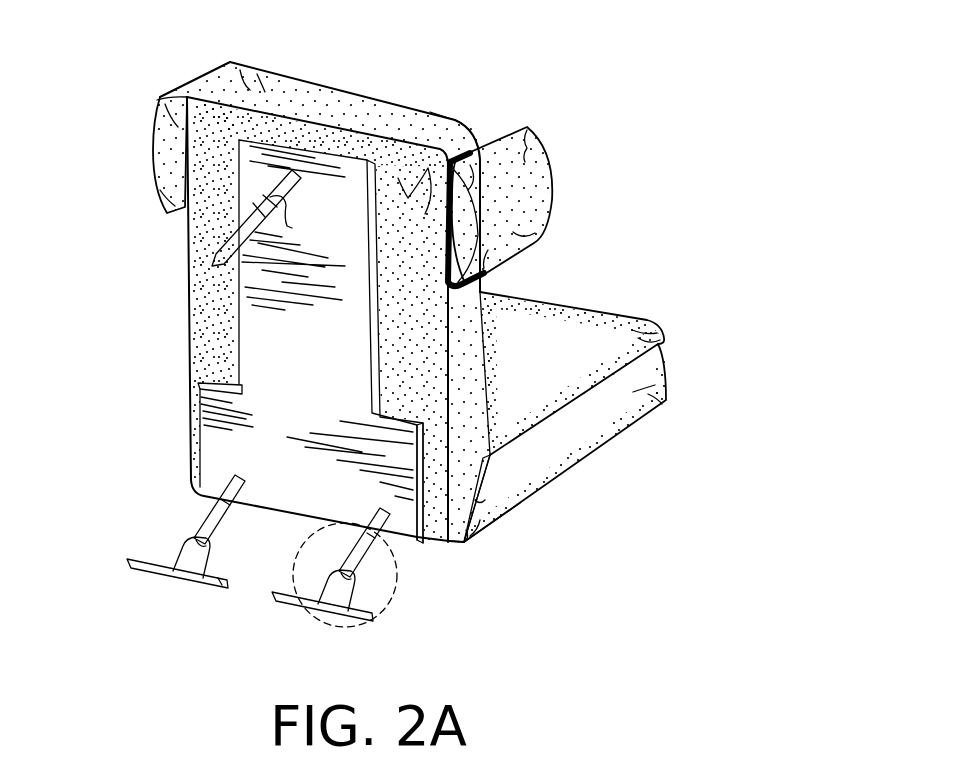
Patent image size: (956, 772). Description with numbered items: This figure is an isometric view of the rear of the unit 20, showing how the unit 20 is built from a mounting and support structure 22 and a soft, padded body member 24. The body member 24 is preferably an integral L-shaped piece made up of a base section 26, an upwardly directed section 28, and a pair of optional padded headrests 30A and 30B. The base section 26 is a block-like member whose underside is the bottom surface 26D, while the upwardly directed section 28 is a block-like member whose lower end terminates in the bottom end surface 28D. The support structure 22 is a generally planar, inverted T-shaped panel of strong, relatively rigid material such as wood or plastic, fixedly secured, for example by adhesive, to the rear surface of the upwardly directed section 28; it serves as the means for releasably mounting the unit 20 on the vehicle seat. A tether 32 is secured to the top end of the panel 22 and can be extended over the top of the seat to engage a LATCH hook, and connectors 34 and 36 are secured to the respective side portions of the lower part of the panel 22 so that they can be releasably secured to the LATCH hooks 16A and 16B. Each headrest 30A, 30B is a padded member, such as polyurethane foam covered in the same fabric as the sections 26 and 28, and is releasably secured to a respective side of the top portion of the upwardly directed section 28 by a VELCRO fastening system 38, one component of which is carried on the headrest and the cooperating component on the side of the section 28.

The hook 16A is at (298, 594).
The hook 16B is at (150, 568).
The unit 20 is at (413, 90).
The mounting and support structure 22 is at (305, 330).
The body member 24 is at (546, 342).
The base section 26 is at (575, 432).
The bottom surface 26D is at (533, 487).
The upwardly directed section 28 is at (188, 272).
The bottom end surface 28D is at (463, 543).
The padded headrest 30A is at (517, 185).
The padded headrest 30B is at (170, 152).
The tether 32 is at (286, 174).
The connector 34 is at (413, 545).
The connector 36 is at (204, 515).
The VELCRO fastening system 38 is at (464, 155).